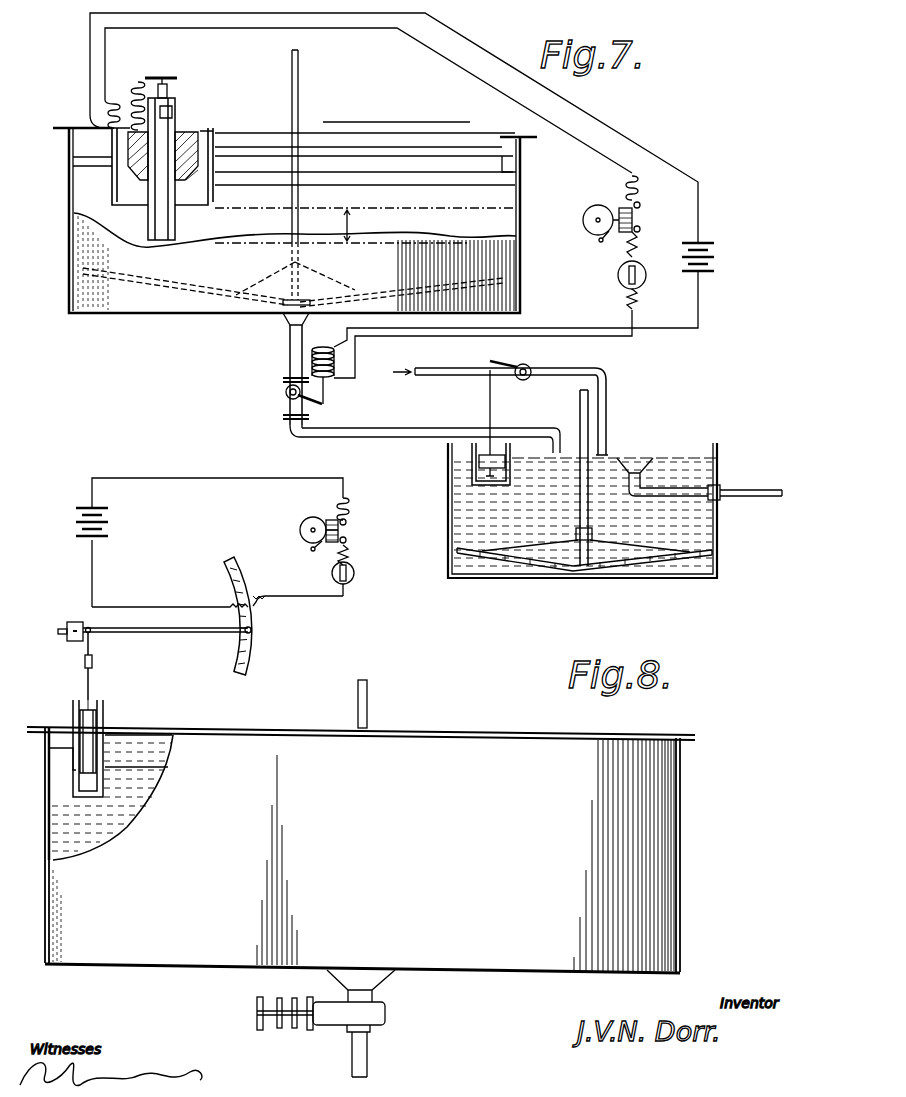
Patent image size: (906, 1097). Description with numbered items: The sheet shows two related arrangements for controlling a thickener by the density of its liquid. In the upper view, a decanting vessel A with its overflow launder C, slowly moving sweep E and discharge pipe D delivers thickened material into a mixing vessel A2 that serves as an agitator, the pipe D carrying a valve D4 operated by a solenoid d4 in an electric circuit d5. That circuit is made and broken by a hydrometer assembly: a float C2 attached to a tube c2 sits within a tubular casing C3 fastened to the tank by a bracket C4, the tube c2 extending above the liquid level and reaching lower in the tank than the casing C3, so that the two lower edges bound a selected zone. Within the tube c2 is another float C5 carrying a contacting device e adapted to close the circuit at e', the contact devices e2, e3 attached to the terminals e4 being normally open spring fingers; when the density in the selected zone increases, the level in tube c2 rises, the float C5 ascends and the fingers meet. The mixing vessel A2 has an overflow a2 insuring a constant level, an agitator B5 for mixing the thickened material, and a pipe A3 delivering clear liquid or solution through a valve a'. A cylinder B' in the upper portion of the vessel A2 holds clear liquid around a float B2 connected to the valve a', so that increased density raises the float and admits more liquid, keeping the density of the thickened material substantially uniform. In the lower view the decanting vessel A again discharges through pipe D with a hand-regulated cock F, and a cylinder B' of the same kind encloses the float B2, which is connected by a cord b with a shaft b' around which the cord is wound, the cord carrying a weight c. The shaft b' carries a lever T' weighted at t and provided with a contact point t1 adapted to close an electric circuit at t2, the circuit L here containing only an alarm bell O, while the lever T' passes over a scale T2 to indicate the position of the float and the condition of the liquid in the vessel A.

In FIG. 7, the decanting vessel A is at (295, 216).
In FIG. 8, the decanting vessel A is at (361, 826).
In FIG. 7, the mixing vessel A2 is at (718, 530).
In FIG. 7, the solution pipe A3 is at (650, 378).
In FIG. 7, the valve a' is at (494, 361).
In FIG. 7, the overflow a2 is at (640, 460).
In FIG. 7, the cylinder B' is at (448, 463).
In FIG. 8, the cylinder B' is at (111, 744).
In FIG. 7, the float B2 is at (487, 455).
In FIG. 8, the float B2 is at (106, 733).
In FIG. 7, the agitator B5 is at (586, 534).
In FIG. 8, the overflow launder C is at (58, 733).
In FIG. 7, the float C2 is at (128, 170).
In FIG. 7, the tubular casing C3 is at (112, 198).
In FIG. 7, the bracket C4 is at (85, 160).
In FIG. 7, the float C5 is at (167, 90).
In FIG. 7, the tube c2 is at (162, 106).
In FIG. 7, the discharge pipe D is at (290, 348).
In FIG. 8, the discharge pipe D is at (365, 1056).
In FIG. 7, the valve D4 is at (286, 393).
In FIG. 7, the solenoid d4 is at (326, 382).
In FIG. 7, the electric circuit d5 is at (387, 22).
In FIG. 7, the sweep E is at (187, 293).
In FIG. 7, the contacting device e is at (188, 101).
In FIG. 7, the circuit closing point e' is at (157, 60).
In FIG. 7, the contact device e2 is at (150, 78).
In FIG. 7, the contact device e3 is at (143, 82).
In FIG. 7, the terminals e4 is at (128, 131).
In FIG. 8, the signal circuit L is at (240, 478).
In FIG. 8, the alarm bell O is at (303, 524).
In FIG. 8, the lever T' is at (167, 647).
In FIG. 8, the scale T2 is at (249, 668).
In FIG. 8, the weight t is at (72, 620).
In FIG. 8, the contact point t1 is at (255, 631).
In FIG. 8, the circuit contact t2 is at (240, 607).
In FIG. 8, the cord b is at (64, 666).
In FIG. 8, the shaft b' is at (113, 652).
In FIG. 8, the weight c is at (96, 670).
In FIG. 8, the hand-regulated cock F is at (337, 1018).